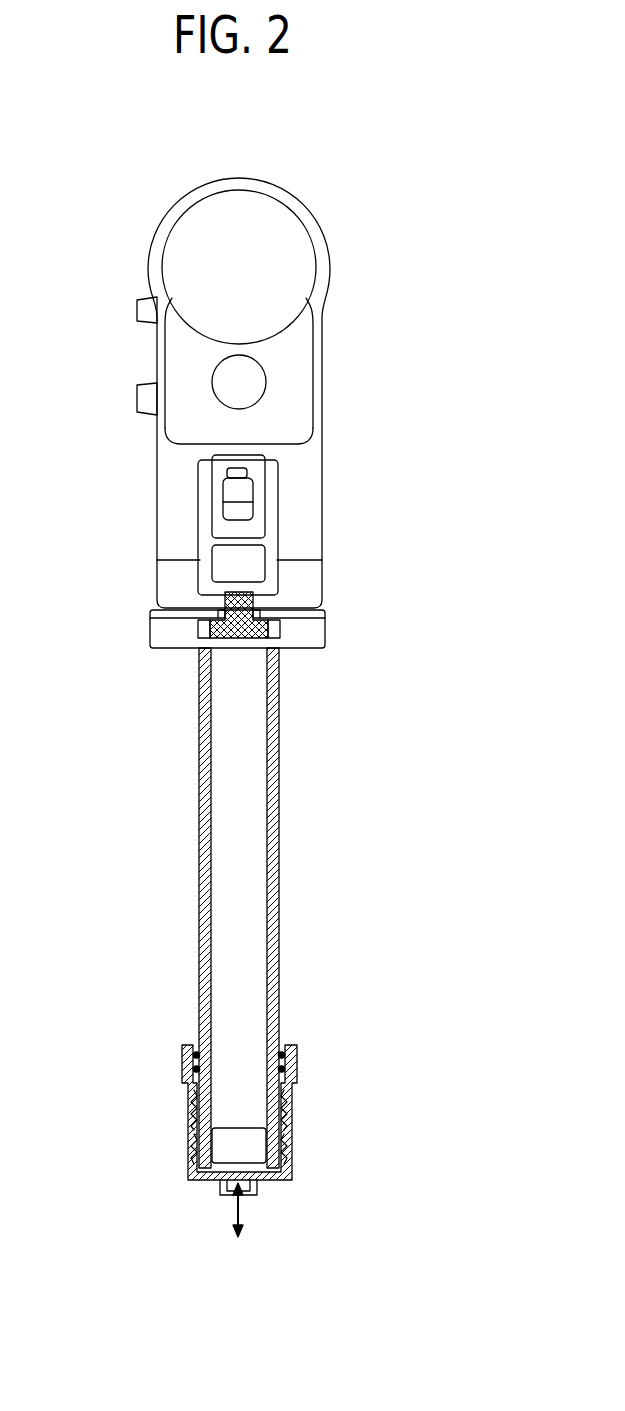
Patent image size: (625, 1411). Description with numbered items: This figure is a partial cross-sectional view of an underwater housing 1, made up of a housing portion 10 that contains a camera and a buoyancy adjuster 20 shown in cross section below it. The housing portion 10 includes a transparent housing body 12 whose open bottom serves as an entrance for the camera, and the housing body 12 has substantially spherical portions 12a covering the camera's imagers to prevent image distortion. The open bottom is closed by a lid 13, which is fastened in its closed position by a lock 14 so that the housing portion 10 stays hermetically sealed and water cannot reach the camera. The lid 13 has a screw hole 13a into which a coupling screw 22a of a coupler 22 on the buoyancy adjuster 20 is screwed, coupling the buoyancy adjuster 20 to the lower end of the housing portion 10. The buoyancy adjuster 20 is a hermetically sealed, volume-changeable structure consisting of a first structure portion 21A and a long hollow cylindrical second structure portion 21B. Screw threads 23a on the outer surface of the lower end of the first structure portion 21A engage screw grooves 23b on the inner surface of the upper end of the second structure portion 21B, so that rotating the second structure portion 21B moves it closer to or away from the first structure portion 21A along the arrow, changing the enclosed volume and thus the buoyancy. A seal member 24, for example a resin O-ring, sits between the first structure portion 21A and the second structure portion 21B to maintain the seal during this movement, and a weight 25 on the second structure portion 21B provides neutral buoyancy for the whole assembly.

The underwater housing 1 is at (352, 186).
The housing portion 10 is at (83, 178).
The housing body 12 is at (322, 478).
The substantially spherical portion 12a is at (257, 212).
The lid 13 is at (322, 587).
The screw hole 13a is at (240, 580).
The lock 14 is at (278, 528).
The buoyancy adjuster 20 is at (83, 610).
The first structure portion 21A is at (279, 772).
The second structure portion 21B is at (292, 1172).
The coupler 22 is at (325, 630).
The coupling screw 22a is at (278, 630).
The screw threads 23a is at (195, 1133).
The screw grooves 23b is at (200, 1117).
The seal member 24 is at (192, 1069).
The weight 25 is at (228, 1157).